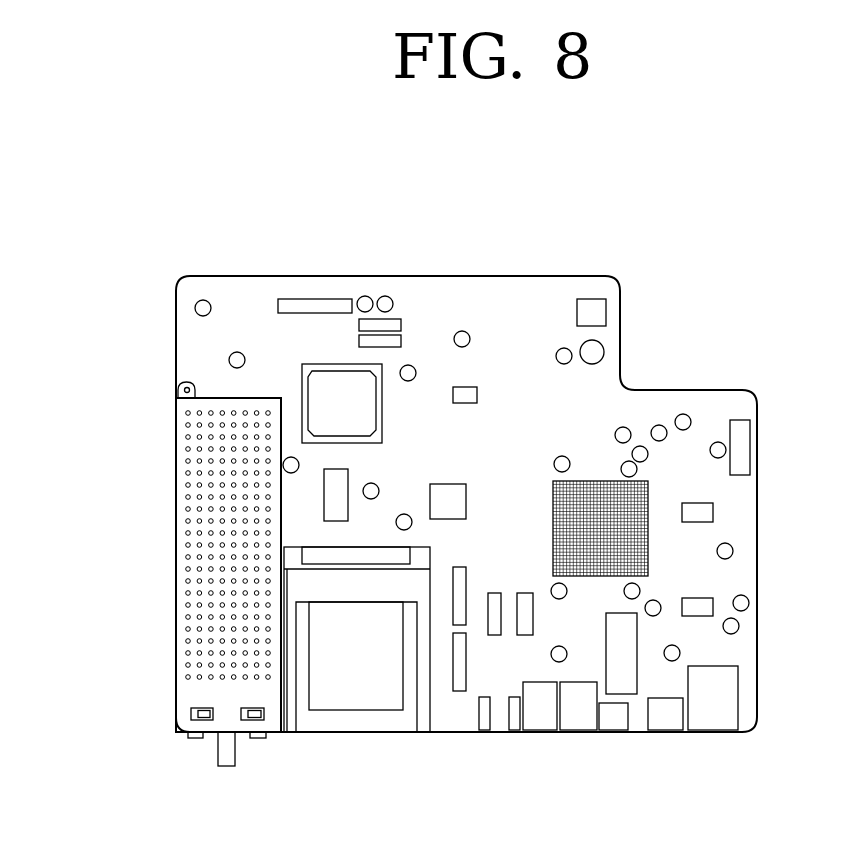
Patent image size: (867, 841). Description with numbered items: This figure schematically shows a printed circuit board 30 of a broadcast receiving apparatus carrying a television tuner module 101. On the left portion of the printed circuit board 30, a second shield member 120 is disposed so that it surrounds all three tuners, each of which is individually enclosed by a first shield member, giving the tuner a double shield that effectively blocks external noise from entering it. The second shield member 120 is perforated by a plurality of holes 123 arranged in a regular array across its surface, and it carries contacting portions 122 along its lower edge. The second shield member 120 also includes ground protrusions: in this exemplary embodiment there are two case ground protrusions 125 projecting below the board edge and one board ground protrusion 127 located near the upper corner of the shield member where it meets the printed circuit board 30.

The printed circuit board 30 is at (512, 256).
The television tuner module 101 is at (137, 437).
The second shield member 120 is at (160, 508).
The holes 123 is at (200, 592).
The board ground protrusion 127 is at (178, 385).
The contacting portions 122 is at (253, 711).
The case ground protrusions 125 is at (253, 739).